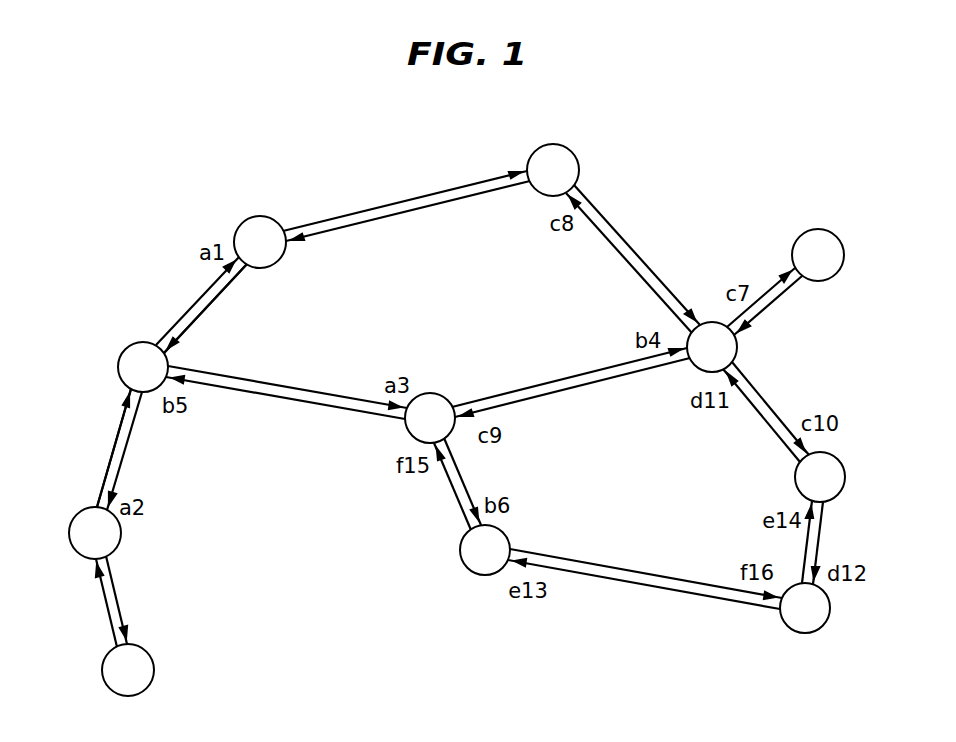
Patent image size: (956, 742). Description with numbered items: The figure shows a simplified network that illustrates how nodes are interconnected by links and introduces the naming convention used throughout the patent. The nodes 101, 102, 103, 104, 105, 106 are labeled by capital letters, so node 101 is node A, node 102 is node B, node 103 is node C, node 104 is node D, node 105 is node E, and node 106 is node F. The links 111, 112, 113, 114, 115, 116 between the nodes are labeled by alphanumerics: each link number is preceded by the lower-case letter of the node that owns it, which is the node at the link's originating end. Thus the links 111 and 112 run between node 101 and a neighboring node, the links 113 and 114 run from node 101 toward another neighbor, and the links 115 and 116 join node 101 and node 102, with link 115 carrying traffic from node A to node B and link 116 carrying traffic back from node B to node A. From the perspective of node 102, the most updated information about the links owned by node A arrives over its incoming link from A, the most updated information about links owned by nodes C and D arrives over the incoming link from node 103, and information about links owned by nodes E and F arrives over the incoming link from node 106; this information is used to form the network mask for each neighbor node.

The node 101 is at (117, 360).
The node 102 is at (441, 394).
The node 103 is at (737, 350).
The node 104 is at (843, 466).
The node 105 is at (802, 633).
The node 106 is at (467, 568).
The link 111 is at (185, 308).
The link 112 is at (213, 307).
The link 113 is at (113, 447).
The link 114 is at (133, 442).
The link 115 is at (307, 388).
The link 116 is at (280, 397).